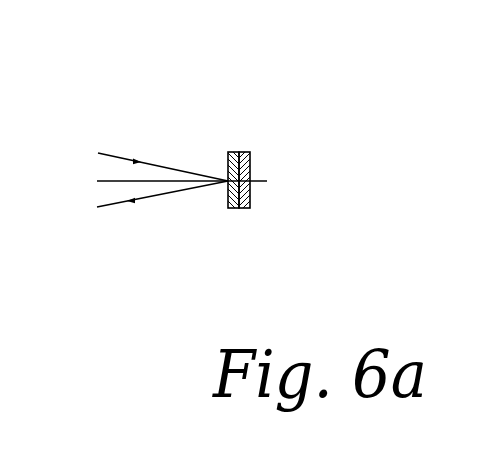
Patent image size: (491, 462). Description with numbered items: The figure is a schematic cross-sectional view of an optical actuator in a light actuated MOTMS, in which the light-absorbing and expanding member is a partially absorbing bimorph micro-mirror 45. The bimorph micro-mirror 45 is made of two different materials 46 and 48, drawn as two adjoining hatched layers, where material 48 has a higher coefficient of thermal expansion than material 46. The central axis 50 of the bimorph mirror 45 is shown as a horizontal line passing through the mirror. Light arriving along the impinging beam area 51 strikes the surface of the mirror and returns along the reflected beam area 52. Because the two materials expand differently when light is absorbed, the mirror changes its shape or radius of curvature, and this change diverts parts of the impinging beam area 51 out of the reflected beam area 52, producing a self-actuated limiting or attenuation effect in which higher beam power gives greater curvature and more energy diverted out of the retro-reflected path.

The bimorph micro-mirror 45 is at (212, 123).
The material 46 is at (248, 152).
The material 48 is at (232, 208).
The central axis 50 is at (116, 181).
The impinging beam area 51 is at (109, 153).
The reflected beam area 52 is at (158, 195).